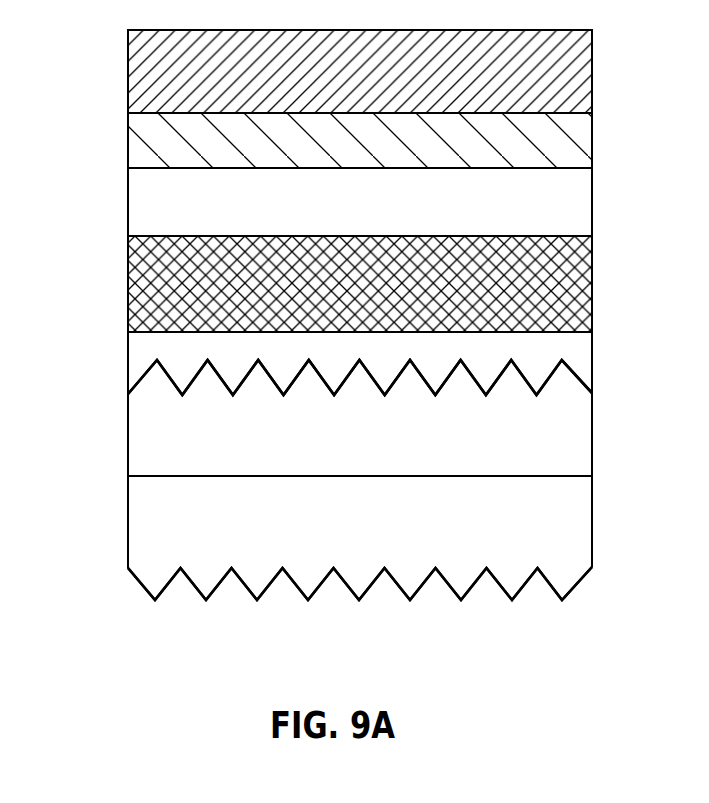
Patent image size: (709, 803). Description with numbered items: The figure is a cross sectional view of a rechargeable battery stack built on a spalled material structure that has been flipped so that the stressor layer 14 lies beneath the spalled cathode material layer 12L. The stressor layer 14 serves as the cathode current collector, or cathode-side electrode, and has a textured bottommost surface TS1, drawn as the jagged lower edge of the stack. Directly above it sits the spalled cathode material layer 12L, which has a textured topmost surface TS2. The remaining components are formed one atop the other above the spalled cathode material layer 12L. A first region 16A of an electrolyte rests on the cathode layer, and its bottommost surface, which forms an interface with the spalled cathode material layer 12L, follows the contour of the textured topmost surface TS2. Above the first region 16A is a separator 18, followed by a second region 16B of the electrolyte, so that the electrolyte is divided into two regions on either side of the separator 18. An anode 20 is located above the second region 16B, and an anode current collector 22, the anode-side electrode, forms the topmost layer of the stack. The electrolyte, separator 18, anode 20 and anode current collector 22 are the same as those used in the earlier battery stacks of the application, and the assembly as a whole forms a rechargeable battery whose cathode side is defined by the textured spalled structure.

The anode current collector 22 is at (373, 83).
The anode 20 is at (373, 152).
The second region of electrolyte 16B is at (385, 210).
The separator 18 is at (373, 293).
The first region of electrolyte 16A is at (131, 350).
The spalled cathode material layer 12L is at (380, 442).
The stressor layer 14 is at (373, 534).
The textured bottommost surface TS1 is at (585, 593).
The textured topmost surface TS2 is at (586, 369).